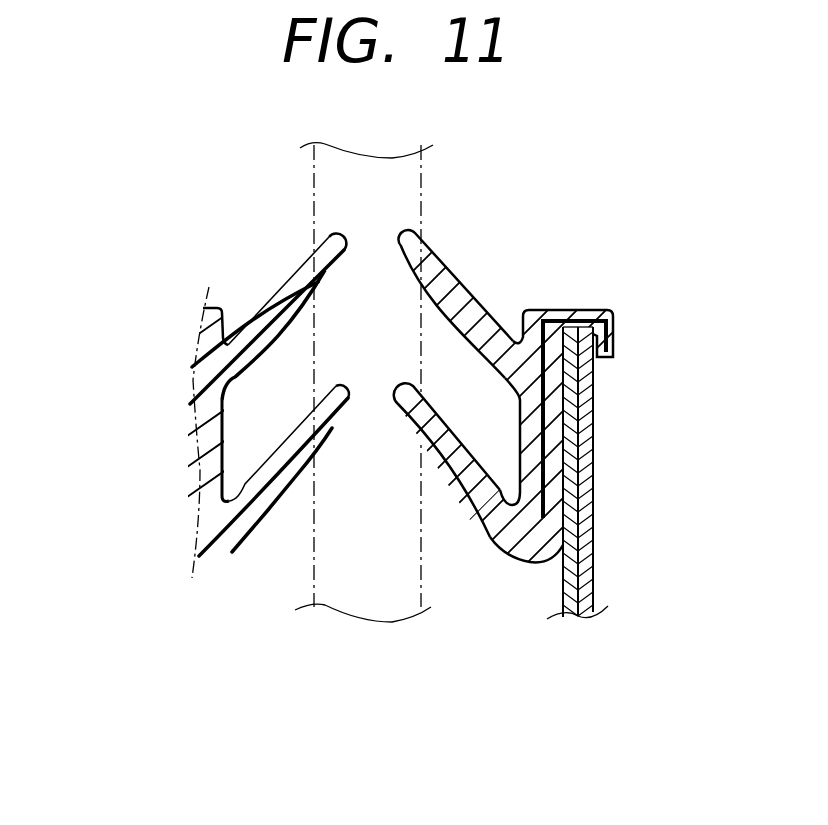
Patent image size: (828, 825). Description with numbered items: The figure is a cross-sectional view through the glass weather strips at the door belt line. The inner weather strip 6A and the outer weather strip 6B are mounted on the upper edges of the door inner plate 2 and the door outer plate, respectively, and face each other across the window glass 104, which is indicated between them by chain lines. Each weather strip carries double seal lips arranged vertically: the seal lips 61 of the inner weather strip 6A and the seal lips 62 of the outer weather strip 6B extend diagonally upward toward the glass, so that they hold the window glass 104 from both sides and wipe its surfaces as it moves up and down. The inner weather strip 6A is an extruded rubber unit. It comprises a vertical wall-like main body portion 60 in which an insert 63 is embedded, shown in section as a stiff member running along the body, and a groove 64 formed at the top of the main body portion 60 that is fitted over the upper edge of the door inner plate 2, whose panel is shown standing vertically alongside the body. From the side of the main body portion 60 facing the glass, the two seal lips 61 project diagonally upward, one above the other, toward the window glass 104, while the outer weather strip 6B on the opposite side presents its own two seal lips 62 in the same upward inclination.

The door inner plate 2 is at (592, 513).
The inner weather strip 6A is at (414, 444).
The outer weather strip 6B is at (215, 435).
The main body portion 60 is at (414, 459).
The seal lips 61 is at (456, 292).
The seal lips 62 is at (285, 292).
The insert 63 is at (547, 427).
The groove 64 is at (612, 317).
The window glass 104 is at (312, 199).